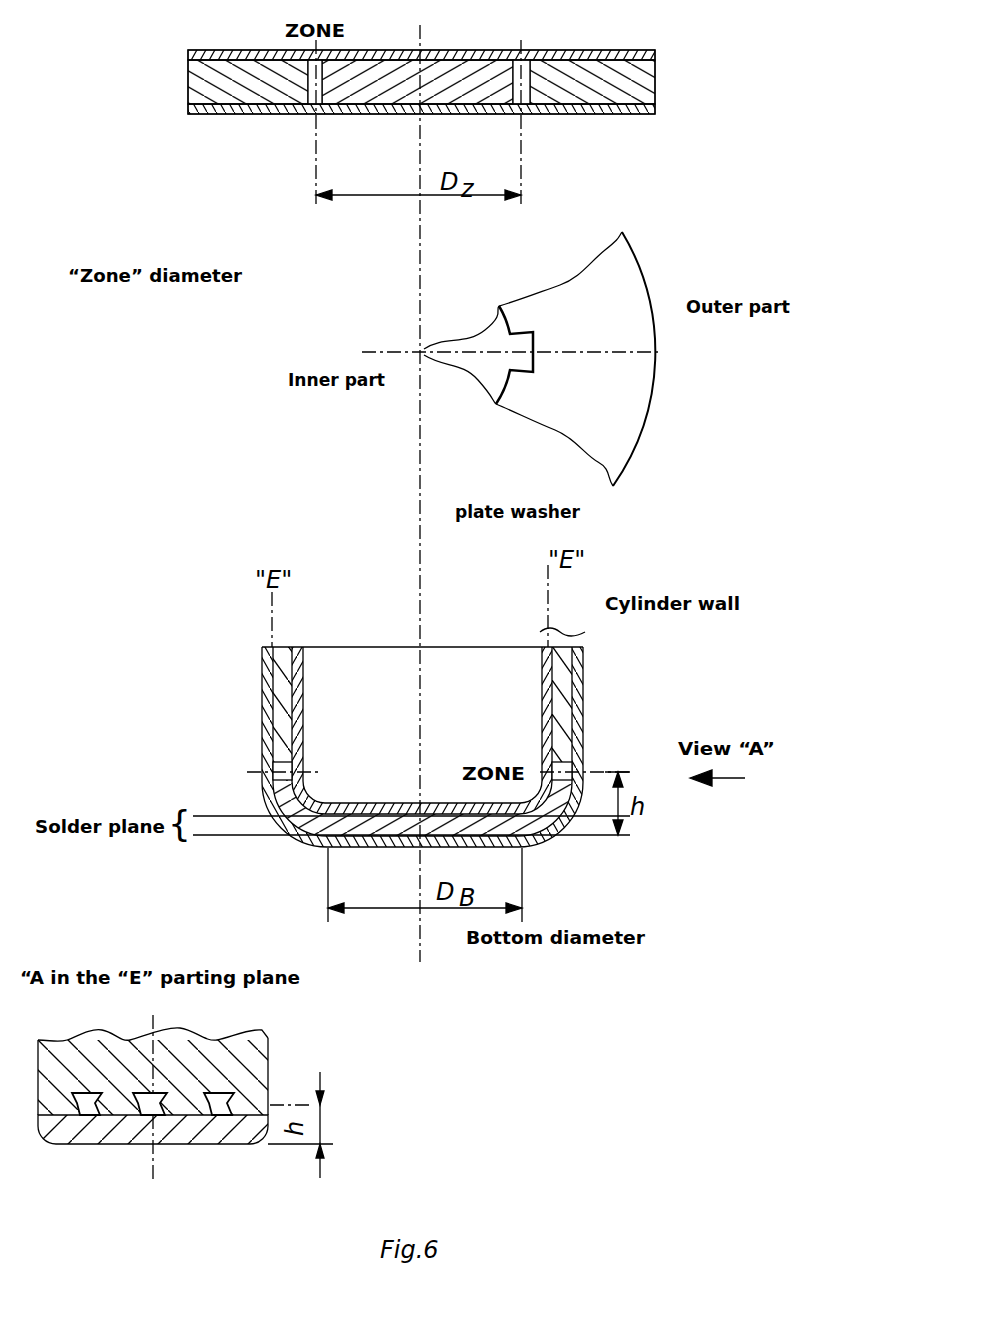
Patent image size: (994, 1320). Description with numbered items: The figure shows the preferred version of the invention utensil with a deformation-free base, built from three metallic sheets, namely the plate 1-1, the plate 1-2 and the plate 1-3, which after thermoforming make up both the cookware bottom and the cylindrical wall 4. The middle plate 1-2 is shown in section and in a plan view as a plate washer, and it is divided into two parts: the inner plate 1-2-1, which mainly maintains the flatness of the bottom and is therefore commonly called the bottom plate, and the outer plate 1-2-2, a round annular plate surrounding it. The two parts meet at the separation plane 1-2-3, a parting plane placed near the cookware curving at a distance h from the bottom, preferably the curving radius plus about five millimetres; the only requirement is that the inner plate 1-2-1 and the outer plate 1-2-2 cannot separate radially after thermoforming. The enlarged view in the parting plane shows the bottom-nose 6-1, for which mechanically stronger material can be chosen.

The plate 1-1 is at (650, 53).
The plate 1-2 is at (568, 82).
The inner plate 1-2-1 is at (343, 94).
The outer plate 1-2-2 is at (655, 86).
The separation plane 1-2-3 is at (303, 116).
The plate 1-3 is at (648, 112).
The cylindrical wall 4 is at (562, 614).
The bottom-nose 6-1 is at (87, 1106).